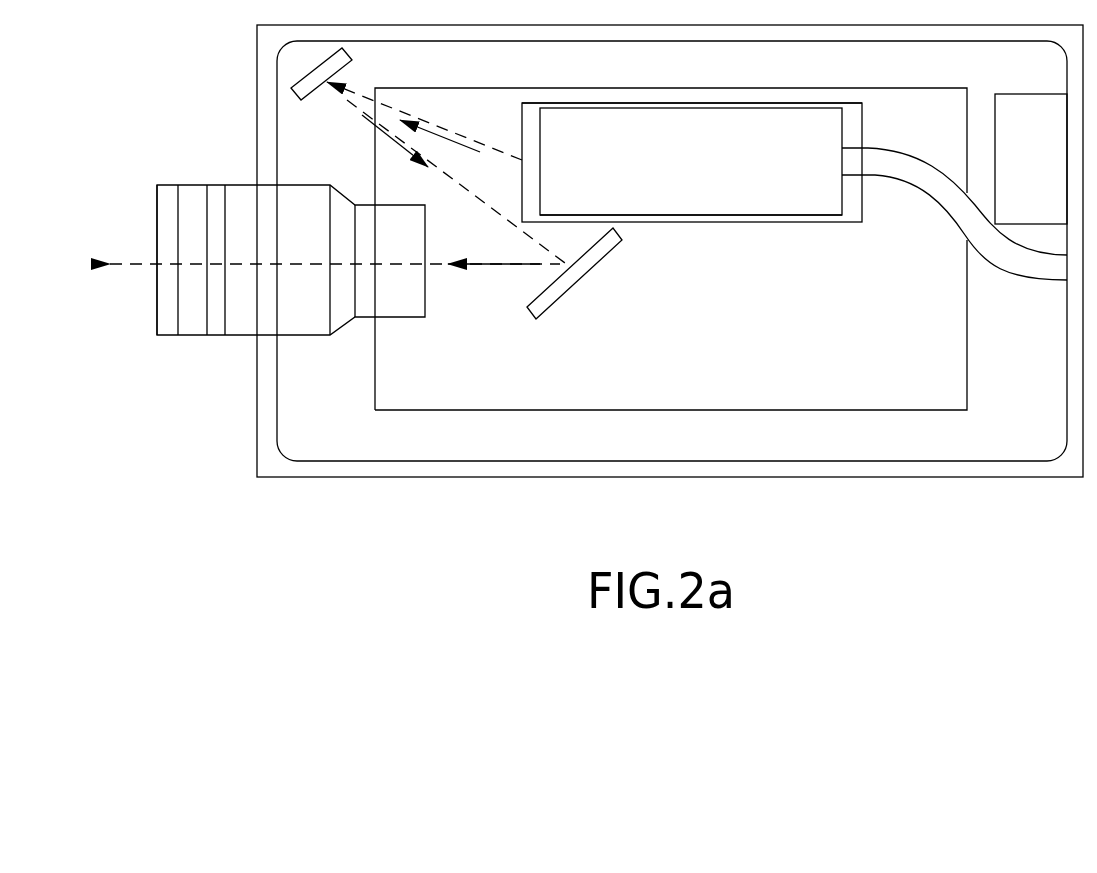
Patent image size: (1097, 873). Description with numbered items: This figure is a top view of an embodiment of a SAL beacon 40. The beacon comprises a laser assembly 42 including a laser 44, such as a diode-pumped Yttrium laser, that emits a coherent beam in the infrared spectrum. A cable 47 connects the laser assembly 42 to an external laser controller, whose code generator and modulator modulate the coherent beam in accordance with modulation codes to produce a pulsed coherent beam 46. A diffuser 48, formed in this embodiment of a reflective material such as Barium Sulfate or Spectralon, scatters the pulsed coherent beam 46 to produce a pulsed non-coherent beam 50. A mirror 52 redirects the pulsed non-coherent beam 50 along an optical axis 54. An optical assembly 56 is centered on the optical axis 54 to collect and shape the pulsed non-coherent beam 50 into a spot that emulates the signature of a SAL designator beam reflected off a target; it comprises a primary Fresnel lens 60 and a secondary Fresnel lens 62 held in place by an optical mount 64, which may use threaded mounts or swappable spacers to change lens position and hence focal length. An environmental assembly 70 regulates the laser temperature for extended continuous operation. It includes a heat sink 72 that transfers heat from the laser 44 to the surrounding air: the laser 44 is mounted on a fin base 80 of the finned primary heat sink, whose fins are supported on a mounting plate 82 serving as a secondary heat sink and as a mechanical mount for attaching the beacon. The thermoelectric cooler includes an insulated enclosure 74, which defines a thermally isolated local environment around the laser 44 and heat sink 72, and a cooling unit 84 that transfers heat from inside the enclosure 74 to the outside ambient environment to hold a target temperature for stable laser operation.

The SAL beacon 40 is at (222, 412).
The laser assembly 42 is at (810, 228).
The laser 44 is at (843, 202).
The pulsed coherent beam 46 is at (456, 143).
The cable 47 is at (1023, 283).
The diffuser 48 is at (300, 101).
The pulsed non-coherent beam 50 is at (407, 147).
The mirror 52 is at (585, 271).
The optical axis 54 is at (433, 267).
The optical assembly 56 is at (185, 357).
The primary Fresnel lens 60 is at (212, 183).
The secondary Fresnel lens 62 is at (163, 183).
The optical mount 64 is at (237, 337).
The environmental assembly 70 is at (807, 492).
The heat sink 72 is at (700, 232).
The insulated enclosure 74 is at (257, 88).
The fin base 80 is at (750, 223).
The mounting plate 82 is at (967, 348).
The cooling unit 84 is at (1003, 92).